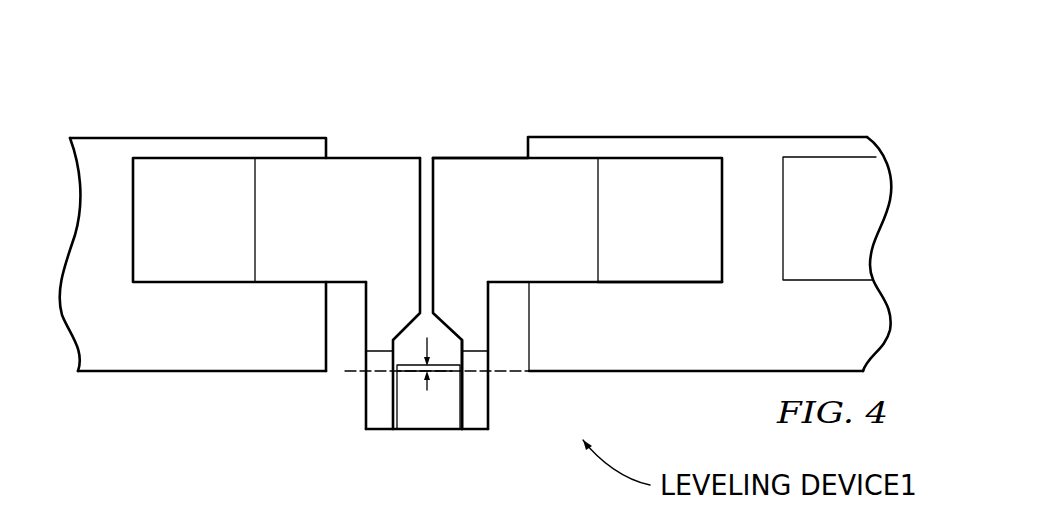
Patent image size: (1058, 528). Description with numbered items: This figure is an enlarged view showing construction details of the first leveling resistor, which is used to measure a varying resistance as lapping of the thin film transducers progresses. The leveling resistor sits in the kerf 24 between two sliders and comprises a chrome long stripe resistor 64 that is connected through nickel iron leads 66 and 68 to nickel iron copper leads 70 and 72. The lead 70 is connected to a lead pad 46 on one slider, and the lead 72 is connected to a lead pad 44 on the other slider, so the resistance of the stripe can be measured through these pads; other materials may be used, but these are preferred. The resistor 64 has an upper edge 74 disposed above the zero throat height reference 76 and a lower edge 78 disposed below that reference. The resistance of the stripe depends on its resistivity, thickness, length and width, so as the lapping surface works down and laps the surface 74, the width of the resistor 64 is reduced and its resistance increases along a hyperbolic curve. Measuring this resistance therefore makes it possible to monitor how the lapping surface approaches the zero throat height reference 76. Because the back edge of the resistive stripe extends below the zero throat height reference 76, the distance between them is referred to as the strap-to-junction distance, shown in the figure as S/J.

The kerf 24 is at (458, 124).
The lead pad 44 is at (648, 182).
The lead pad 46 is at (193, 182).
The long stripe resistor 64 is at (412, 427).
The lead 66 is at (382, 420).
The lead 68 is at (480, 392).
The lead 70 is at (377, 310).
The lead 72 is at (478, 322).
The upper edge 74 is at (438, 432).
The zero throat height reference 76 is at (345, 372).
The lower edge 78 is at (438, 363).